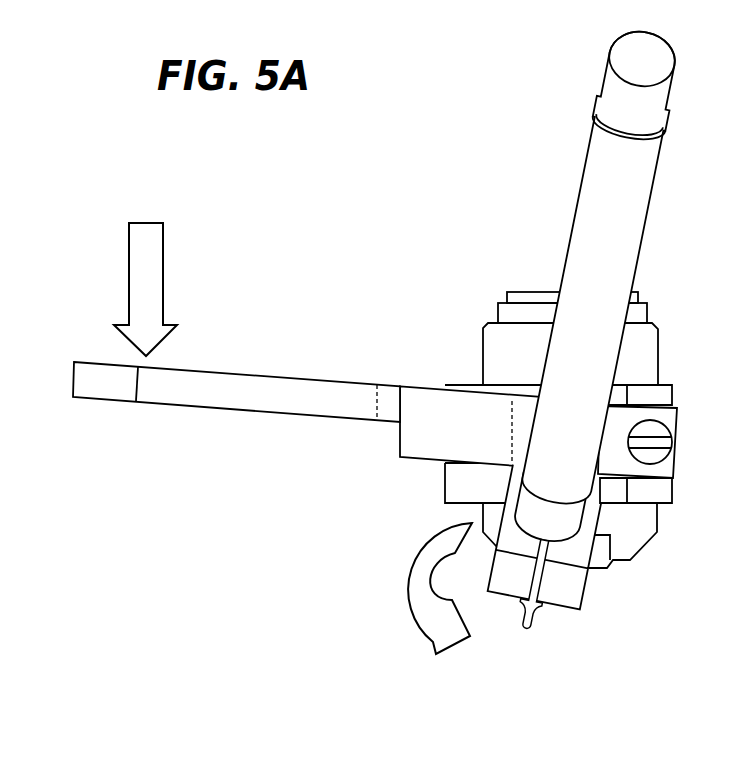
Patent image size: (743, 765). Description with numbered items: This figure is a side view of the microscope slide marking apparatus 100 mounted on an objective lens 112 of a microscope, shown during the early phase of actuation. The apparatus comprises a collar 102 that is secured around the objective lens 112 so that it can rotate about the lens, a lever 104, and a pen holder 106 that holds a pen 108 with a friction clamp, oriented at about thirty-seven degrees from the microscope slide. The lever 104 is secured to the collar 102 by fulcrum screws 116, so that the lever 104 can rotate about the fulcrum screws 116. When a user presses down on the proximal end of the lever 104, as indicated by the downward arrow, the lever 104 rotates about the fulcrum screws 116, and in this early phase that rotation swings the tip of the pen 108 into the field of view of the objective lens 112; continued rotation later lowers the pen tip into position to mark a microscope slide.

The microscope slide marking apparatus 100 is at (388, 339).
The collar 102 is at (457, 387).
The lever 104 is at (400, 440).
The pen holder 106 is at (586, 596).
The pen 108 is at (578, 189).
The objective lens 112 is at (483, 342).
The fulcrum screws 116 is at (652, 421).